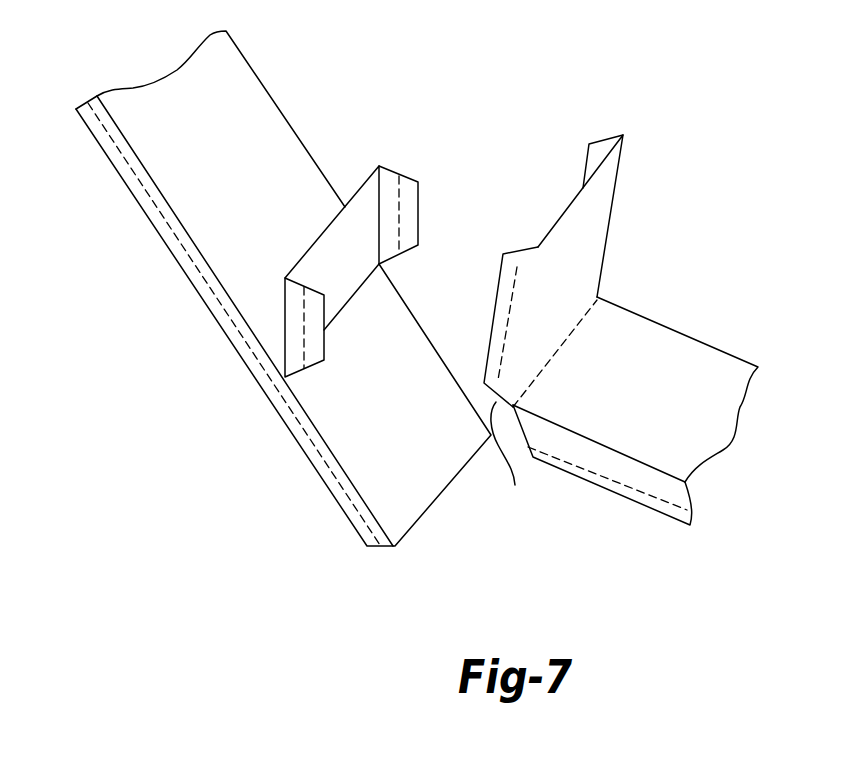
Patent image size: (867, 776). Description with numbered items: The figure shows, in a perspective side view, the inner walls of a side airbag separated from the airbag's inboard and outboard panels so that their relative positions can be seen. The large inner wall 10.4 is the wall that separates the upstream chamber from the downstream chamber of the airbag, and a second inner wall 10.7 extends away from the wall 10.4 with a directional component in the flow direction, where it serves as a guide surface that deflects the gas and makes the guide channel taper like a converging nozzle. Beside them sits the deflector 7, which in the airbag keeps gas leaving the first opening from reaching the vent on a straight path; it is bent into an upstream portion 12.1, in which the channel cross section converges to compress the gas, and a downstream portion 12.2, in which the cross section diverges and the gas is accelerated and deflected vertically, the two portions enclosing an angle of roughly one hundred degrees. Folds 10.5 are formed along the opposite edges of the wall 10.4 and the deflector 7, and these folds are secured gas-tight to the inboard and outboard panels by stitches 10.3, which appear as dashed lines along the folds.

The deflector 7 is at (645, 310).
The stitches 10.3 is at (403, 230).
The inner wall 10.4 is at (128, 187).
The folds 10.5 is at (400, 175).
The second inner wall 10.7 is at (379, 167).
The upstream portion 12.1 is at (713, 348).
The downstream portion 12.2 is at (617, 185).